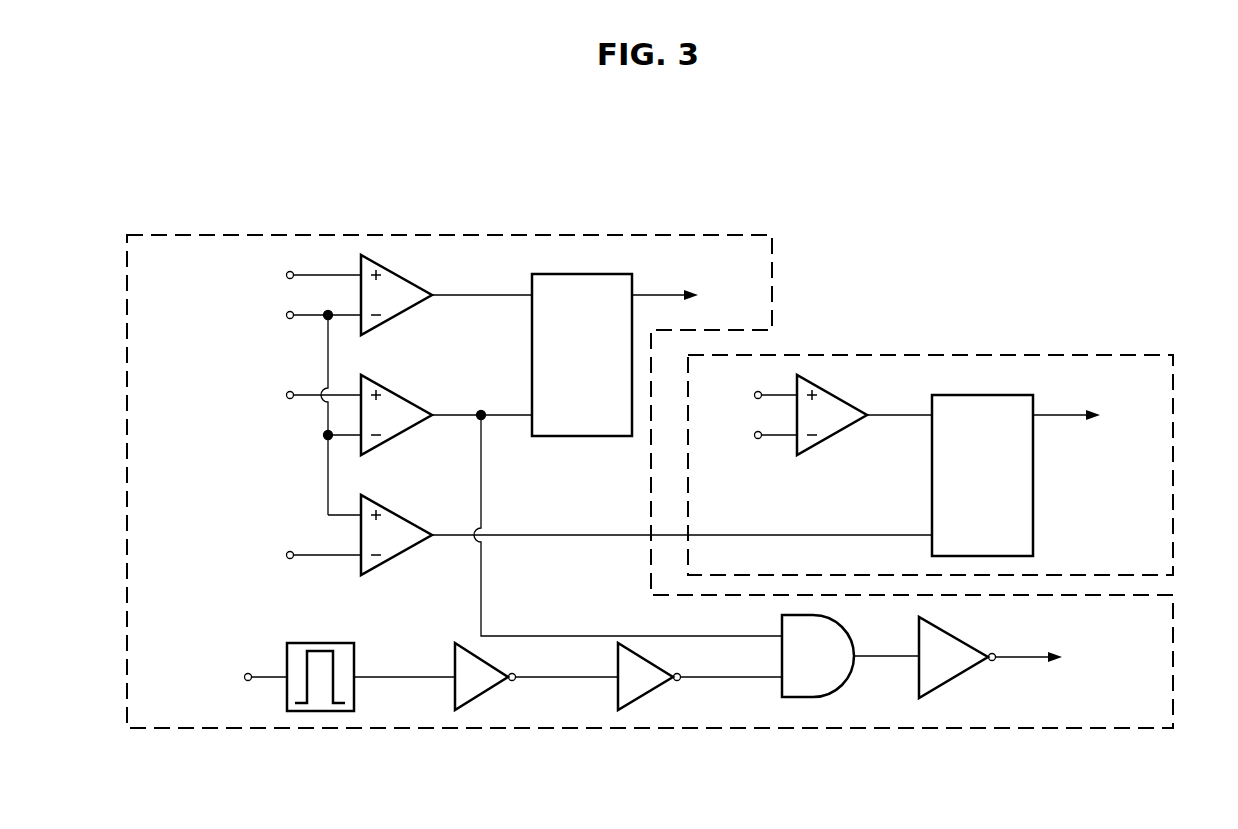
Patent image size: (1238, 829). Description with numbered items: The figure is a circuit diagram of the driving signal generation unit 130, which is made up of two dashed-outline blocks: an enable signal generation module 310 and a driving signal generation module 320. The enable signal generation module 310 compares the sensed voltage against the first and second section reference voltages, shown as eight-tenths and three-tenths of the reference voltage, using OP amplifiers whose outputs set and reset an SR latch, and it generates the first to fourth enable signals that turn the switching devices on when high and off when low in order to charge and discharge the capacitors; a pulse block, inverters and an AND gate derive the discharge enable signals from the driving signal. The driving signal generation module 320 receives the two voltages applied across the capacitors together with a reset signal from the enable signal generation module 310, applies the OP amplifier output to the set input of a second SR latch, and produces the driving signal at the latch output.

The driving signal generation unit 130 is at (628, 124).
The enable signal generation module 310 is at (453, 234).
The driving signal generation module 320 is at (933, 354).